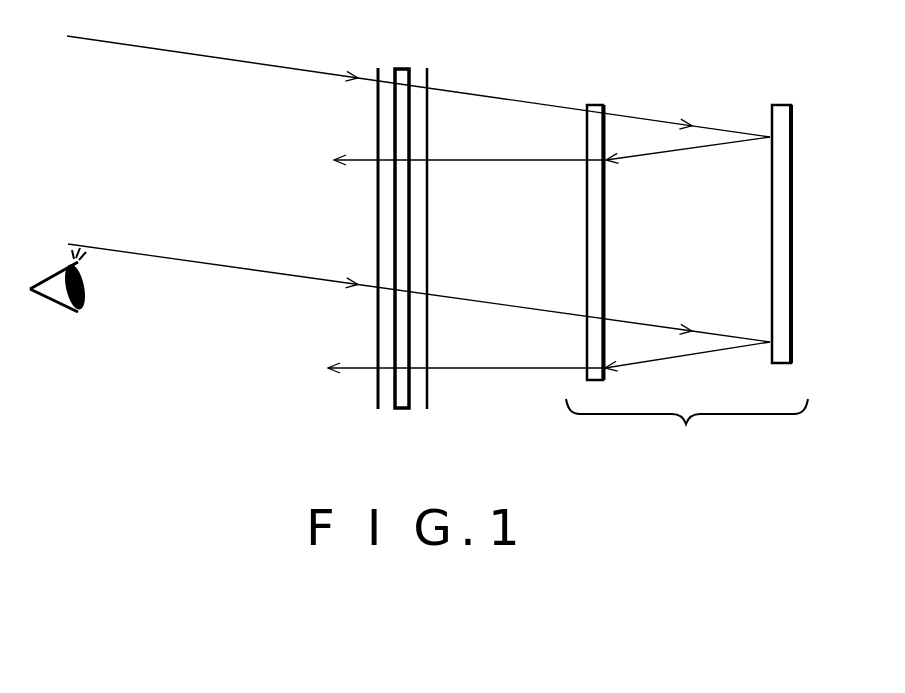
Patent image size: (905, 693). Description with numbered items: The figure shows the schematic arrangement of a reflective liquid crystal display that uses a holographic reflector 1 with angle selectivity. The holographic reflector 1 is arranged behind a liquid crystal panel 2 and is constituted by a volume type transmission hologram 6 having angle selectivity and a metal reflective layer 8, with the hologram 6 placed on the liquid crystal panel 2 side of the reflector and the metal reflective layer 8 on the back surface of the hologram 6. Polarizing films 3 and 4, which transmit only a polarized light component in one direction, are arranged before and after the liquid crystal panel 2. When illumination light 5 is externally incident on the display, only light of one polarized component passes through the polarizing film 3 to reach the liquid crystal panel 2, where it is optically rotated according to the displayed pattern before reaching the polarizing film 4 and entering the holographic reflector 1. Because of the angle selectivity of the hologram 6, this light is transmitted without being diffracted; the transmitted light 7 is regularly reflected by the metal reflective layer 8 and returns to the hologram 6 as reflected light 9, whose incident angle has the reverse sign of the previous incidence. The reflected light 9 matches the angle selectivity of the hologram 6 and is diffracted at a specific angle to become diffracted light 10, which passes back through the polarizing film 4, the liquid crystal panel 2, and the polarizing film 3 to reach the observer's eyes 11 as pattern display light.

The holographic reflector 1 is at (687, 432).
The liquid crystal panel 2 is at (403, 66).
The polarizing film 3 is at (378, 65).
The polarizing film 4 is at (428, 66).
The illumination light 5 is at (195, 54).
The volume type transmission hologram 6 is at (597, 102).
The transmitted light 7 is at (714, 128).
The metal reflective layer 8 is at (782, 102).
The reflected light 9 is at (682, 150).
The diffracted light 10 is at (495, 162).
The observer's eyes 11 is at (66, 314).